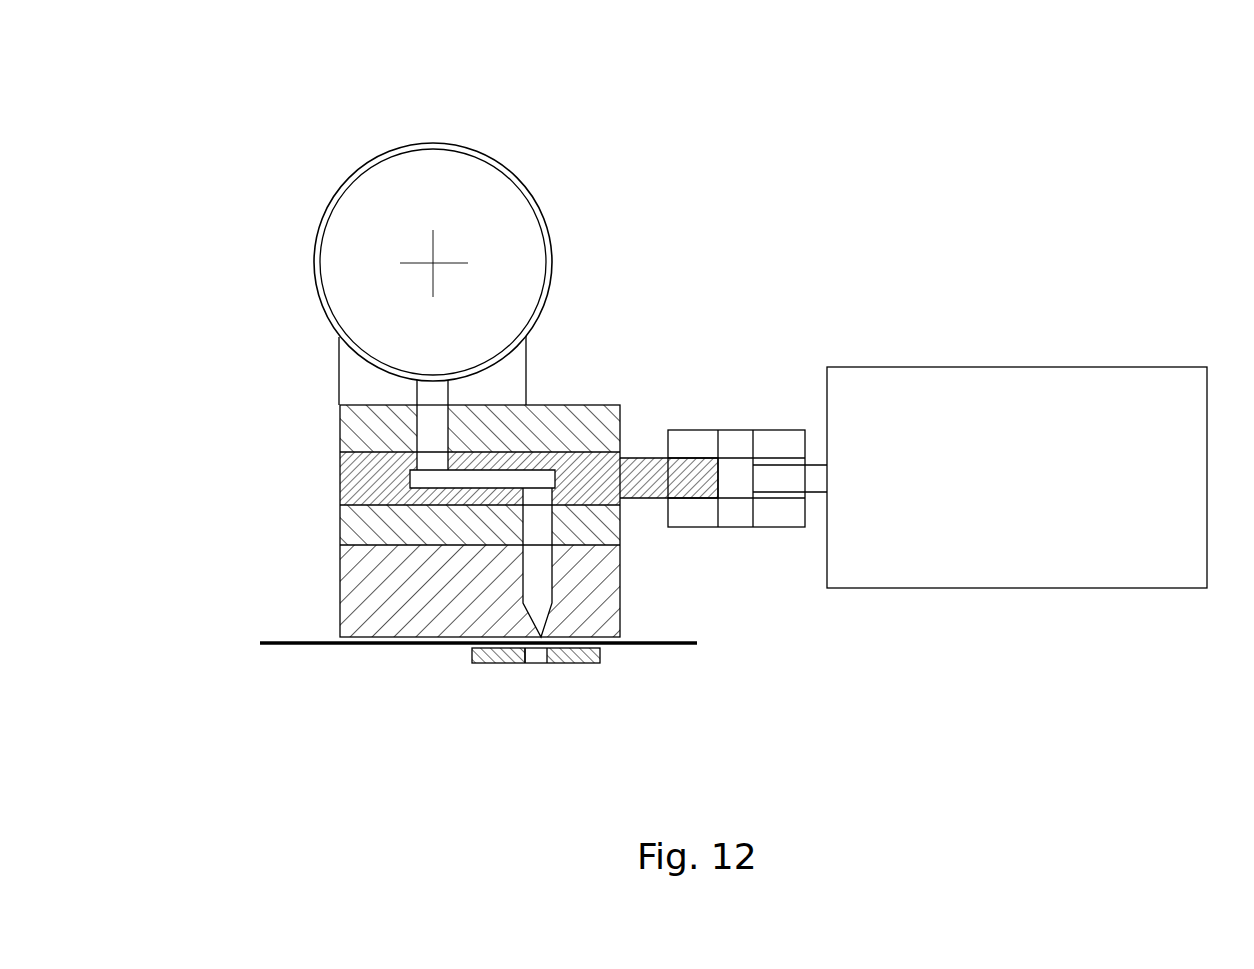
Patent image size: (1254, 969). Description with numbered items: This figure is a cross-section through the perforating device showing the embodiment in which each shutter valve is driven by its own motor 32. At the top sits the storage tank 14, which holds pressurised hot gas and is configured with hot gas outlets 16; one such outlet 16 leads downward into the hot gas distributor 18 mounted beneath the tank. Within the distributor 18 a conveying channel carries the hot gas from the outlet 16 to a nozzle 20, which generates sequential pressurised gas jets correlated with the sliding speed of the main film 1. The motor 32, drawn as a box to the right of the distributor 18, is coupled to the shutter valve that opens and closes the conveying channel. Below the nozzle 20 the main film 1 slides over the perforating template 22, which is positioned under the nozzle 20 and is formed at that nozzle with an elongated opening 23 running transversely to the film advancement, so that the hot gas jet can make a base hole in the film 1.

The main film 1 is at (282, 643).
The storage tank 14 is at (463, 147).
The hot gas outlet 16 is at (433, 380).
The hot gas distributor 18 is at (328, 467).
The nozzle 20 is at (542, 618).
The perforating template 22 is at (473, 658).
The elongated opening 23 is at (536, 658).
The motor 32 is at (937, 362).